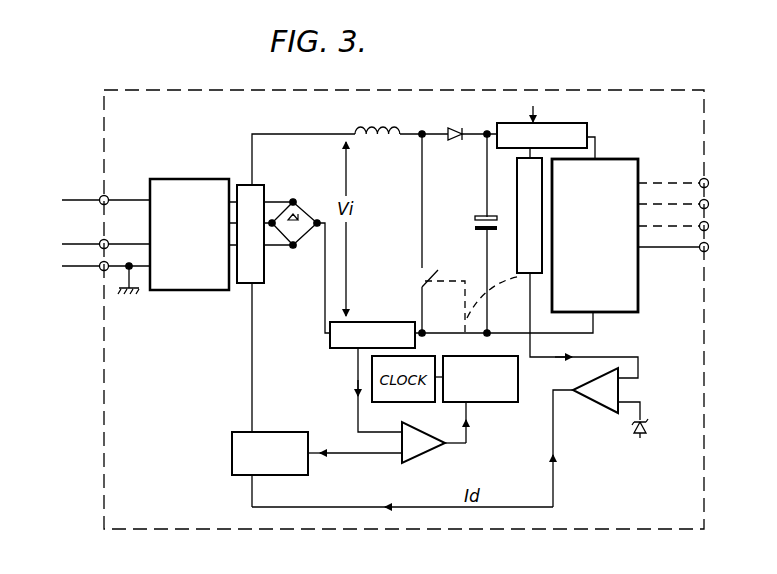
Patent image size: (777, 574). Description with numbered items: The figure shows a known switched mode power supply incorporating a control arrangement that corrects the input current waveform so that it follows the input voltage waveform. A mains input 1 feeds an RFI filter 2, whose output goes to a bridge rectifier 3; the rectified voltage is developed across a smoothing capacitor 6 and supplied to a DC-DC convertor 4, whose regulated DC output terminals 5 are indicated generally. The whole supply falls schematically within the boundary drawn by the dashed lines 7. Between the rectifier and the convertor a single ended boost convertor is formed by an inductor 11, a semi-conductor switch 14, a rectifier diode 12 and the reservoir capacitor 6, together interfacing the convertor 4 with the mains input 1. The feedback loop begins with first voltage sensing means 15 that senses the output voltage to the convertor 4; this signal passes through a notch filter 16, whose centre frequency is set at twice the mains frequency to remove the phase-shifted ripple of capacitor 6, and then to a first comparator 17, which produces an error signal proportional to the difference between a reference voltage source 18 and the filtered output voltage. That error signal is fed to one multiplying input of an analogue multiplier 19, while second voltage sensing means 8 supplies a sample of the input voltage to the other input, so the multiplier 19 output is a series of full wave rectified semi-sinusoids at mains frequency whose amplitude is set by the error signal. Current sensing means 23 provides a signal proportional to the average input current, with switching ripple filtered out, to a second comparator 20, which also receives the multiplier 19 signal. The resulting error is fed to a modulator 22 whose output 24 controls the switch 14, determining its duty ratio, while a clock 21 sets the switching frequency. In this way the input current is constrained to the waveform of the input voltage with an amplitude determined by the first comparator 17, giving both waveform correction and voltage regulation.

The mains input 1 is at (77, 187).
The RFI filter 2 is at (170, 178).
The bridge rectifier 3 is at (283, 219).
The DC-DC convertor 4 is at (608, 167).
The regulated DC output terminals 5 is at (674, 279).
The smoothing capacitor 6 is at (474, 220).
The dashed lines 7 is at (622, 514).
The second voltage sensing means 8 is at (242, 185).
The inductor 11 is at (365, 130).
The rectifier diode 12 is at (453, 128).
The semi-conductor switch 14 is at (427, 268).
The first voltage sensing means 15 is at (513, 123).
The notch filter 16 is at (517, 185).
The first comparator 17 is at (598, 392).
The reference voltage source 18 is at (639, 437).
The analogue multiplier 19 is at (232, 443).
The second comparator 20 is at (411, 457).
The clock 21 is at (362, 385).
The modulator 22 is at (476, 404).
The current sensing means 23 is at (340, 349).
The modulator output 24 is at (494, 297).